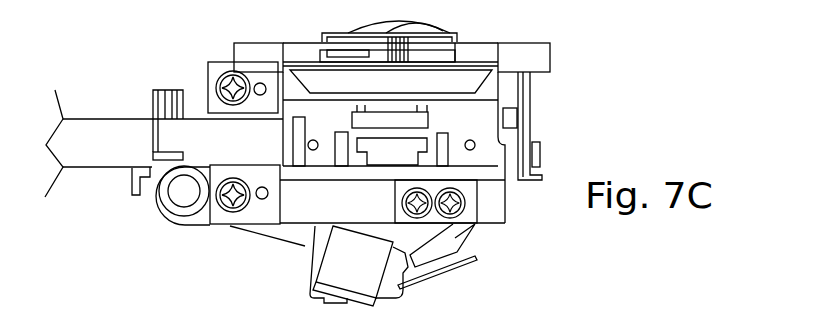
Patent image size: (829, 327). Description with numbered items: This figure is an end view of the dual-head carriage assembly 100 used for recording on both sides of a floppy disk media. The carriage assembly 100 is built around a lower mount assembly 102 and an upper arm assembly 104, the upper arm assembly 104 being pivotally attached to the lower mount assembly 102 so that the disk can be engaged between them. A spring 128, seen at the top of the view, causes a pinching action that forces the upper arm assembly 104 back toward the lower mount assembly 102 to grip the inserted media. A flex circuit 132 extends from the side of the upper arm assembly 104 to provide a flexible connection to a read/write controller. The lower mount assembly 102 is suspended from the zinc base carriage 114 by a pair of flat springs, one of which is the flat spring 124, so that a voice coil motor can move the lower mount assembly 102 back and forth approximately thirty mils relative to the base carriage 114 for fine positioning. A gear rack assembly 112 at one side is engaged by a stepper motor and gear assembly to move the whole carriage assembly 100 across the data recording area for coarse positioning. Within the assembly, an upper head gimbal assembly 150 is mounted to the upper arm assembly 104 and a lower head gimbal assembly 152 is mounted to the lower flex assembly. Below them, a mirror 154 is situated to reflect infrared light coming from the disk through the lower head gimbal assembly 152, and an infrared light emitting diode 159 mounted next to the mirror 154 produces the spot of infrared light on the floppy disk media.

The carriage assembly 100 is at (105, 87).
The lower mount assembly 102 is at (503, 222).
The upper arm assembly 104 is at (406, 92).
The gear rack assembly 112 is at (537, 104).
The zinc base carriage 114 is at (157, 216).
The flat spring 124 is at (343, 211).
The spring 128 is at (383, 22).
The flex circuit 132 is at (243, 153).
The upper head gimbal assembly 150 is at (406, 126).
The lower head gimbal assembly 152 is at (408, 160).
The mirror 154 is at (364, 272).
The infrared light emitting diode 159 is at (468, 262).